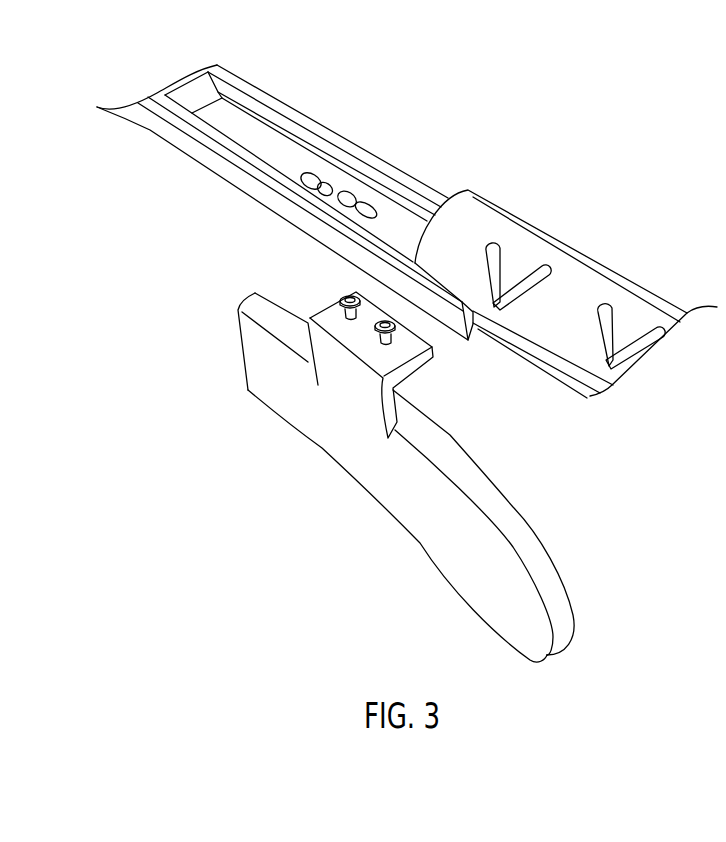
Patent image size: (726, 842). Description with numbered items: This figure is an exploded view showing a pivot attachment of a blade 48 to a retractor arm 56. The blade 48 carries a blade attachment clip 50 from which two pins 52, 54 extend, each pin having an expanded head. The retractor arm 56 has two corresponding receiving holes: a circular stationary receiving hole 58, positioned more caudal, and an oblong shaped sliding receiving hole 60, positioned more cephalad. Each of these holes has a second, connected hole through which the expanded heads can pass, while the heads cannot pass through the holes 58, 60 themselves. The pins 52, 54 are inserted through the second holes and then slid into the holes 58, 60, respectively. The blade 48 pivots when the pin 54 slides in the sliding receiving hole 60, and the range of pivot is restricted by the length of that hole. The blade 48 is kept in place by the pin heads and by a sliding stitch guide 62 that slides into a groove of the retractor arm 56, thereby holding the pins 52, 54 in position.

The blade 48 is at (533, 527).
The blade attachment clip 50 is at (404, 379).
The pin 52 is at (345, 297).
The pin 54 is at (434, 358).
The retractor arm 56 is at (260, 90).
The stationary receiving hole 58 is at (318, 172).
The sliding receiving hole 60 is at (367, 200).
The sliding stitch guide 62 is at (557, 237).